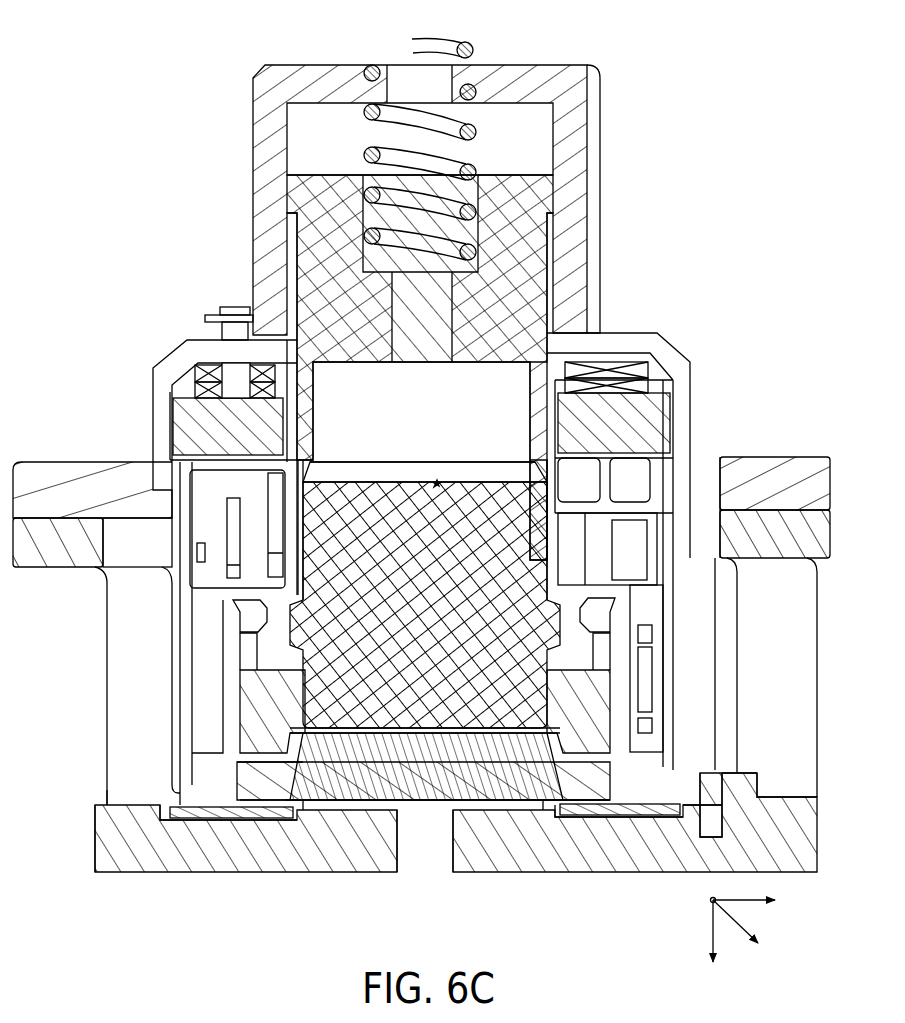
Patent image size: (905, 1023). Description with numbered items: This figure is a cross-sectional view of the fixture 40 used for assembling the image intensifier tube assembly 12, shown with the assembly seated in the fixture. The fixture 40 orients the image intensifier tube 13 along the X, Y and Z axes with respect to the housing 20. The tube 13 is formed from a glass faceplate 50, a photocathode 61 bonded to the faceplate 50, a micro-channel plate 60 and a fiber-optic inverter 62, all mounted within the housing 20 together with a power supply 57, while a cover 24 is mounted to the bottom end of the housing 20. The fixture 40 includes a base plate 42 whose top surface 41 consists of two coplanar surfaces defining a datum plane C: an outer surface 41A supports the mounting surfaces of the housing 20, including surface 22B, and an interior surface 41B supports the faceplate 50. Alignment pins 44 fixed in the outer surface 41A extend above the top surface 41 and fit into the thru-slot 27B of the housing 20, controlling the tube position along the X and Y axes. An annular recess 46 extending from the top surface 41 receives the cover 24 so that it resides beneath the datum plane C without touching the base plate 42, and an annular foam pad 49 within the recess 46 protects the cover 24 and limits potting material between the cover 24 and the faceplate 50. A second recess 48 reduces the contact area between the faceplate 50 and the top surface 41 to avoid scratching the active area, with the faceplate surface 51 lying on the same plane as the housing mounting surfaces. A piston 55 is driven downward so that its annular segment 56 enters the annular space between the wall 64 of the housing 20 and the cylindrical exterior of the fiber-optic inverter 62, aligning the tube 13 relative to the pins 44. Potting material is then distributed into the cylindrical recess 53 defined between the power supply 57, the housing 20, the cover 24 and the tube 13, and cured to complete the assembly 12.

The fixture 40 is at (166, 53).
The piston 55 is at (527, 272).
The annular segment 56 is at (312, 437).
The power supply 57 is at (640, 483).
The micro-channel plate 60 is at (297, 735).
The image intensifier tube 13 is at (437, 482).
The fiber-optic inverter 62 is at (472, 495).
The wall 64 is at (550, 567).
The cylindrical recess 53 is at (235, 622).
The housing 20 is at (673, 628).
The image intensifier tube assembly 12 is at (413, 616).
The mounting surface 22B is at (730, 782).
The datum plane C is at (750, 797).
The thru-slot 27B is at (707, 776).
The alignment pins 44 is at (712, 823).
The top surface 41 is at (100, 802).
The outer surface 41A is at (123, 802).
The interior surface 41B is at (296, 818).
The cover 24 is at (195, 812).
The foam pad 49 is at (230, 812).
The annular recess 46 is at (250, 814).
The photocathode 61 is at (303, 745).
The second recess 48 is at (340, 808).
The faceplate surface 51 is at (505, 815).
The base plate 42 is at (613, 870).
The glass faceplate 50 is at (413, 780).